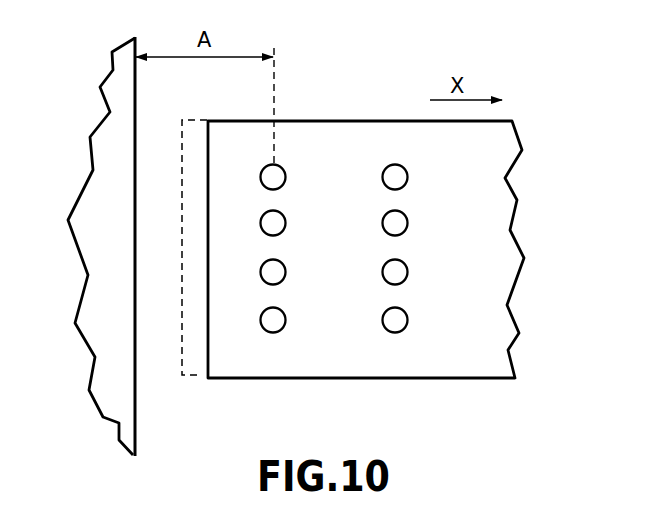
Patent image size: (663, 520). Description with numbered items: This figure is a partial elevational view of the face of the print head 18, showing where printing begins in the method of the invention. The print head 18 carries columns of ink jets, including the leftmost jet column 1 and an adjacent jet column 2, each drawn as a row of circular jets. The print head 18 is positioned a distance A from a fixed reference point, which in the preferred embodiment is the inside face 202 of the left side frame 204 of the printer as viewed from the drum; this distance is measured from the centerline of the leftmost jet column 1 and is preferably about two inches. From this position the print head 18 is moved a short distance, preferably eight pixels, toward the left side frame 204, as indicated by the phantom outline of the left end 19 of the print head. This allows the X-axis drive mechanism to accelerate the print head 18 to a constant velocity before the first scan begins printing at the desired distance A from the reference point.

The leftmost jet column 1 is at (273, 347).
The jet column 2 is at (395, 347).
The print head 18 is at (507, 213).
The left end of the print head 19 is at (188, 140).
The inside face 202 is at (136, 418).
The left side frame 204 is at (92, 197).